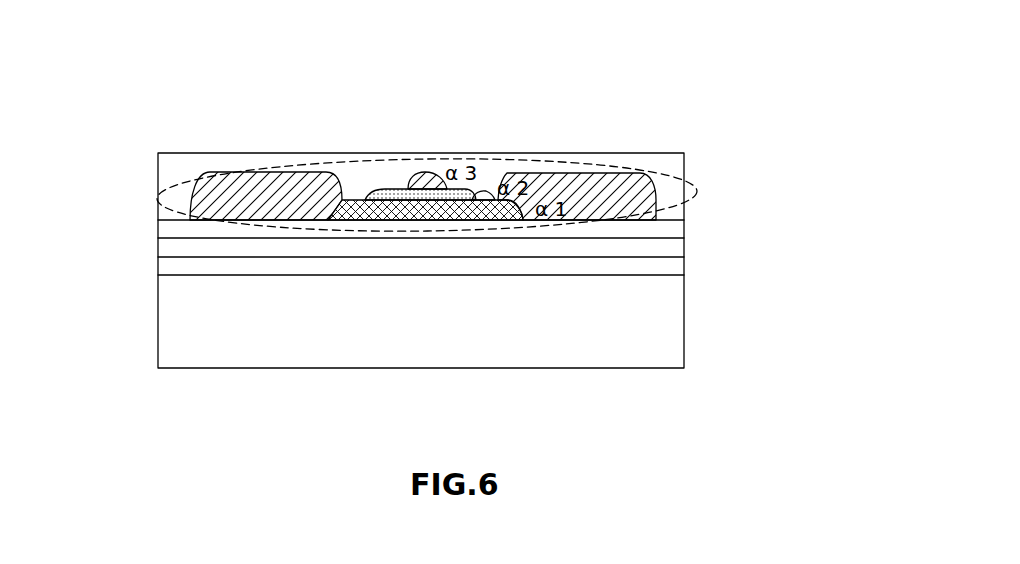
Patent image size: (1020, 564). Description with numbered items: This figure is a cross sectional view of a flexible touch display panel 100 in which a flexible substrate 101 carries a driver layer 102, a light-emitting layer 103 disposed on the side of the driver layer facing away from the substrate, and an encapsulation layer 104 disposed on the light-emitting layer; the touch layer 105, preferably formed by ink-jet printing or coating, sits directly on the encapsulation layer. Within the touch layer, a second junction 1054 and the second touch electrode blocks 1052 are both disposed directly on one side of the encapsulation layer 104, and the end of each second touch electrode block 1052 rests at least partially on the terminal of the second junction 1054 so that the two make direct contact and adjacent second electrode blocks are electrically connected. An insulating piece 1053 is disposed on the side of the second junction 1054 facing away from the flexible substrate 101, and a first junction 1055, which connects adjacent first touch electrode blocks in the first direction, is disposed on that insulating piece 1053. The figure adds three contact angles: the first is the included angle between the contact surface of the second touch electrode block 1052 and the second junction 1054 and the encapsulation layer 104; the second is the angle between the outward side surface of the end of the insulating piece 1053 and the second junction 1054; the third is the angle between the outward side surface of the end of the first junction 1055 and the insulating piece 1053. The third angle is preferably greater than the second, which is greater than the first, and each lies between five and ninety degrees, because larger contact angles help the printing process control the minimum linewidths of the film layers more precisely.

The flexible touch display panel 100 is at (450, 421).
The flexible substrate 101 is at (177, 338).
The driver layer 102 is at (170, 271).
The light-emitting layer 103 is at (168, 247).
The encapsulation layer 104 is at (168, 222).
The touch layer 105 is at (697, 193).
The second touch electrode block 1052 is at (250, 180).
The insulating piece 1053 is at (386, 197).
The second junction 1054 is at (370, 212).
The first junction 1055 is at (423, 175).